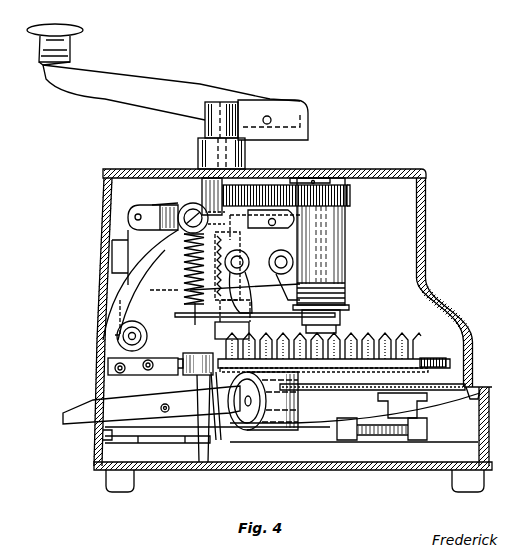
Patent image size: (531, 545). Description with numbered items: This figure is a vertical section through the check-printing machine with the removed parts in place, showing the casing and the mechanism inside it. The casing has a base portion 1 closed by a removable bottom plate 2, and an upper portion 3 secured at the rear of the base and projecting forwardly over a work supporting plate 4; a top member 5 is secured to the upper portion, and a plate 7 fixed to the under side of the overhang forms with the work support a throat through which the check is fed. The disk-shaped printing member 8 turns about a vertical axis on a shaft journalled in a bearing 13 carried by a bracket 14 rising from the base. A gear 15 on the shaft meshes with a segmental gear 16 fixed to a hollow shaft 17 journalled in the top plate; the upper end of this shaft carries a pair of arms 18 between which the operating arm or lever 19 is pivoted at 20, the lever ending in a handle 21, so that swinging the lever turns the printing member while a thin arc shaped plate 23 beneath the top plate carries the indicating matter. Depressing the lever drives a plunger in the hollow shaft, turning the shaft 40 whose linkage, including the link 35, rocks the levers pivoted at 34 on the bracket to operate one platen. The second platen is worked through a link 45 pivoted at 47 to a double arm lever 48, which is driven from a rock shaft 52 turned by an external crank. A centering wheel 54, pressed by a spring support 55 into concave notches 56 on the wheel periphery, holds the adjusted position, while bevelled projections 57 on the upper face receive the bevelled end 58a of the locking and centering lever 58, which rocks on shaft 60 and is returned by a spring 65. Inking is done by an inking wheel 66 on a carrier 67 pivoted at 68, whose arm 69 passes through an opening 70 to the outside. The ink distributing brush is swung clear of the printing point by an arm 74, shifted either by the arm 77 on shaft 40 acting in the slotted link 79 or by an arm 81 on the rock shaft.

The base portion 1 is at (490, 426).
The removable bottom plate 2 is at (416, 470).
The upper portion 3 is at (98, 338).
The work supporting plate 4 is at (484, 392).
The top member 5 is at (343, 167).
The plate 7 is at (450, 384).
The printing member 8 is at (446, 359).
The bearing 13 is at (345, 247).
The bracket 14 is at (138, 287).
The gear 15 is at (350, 198).
The segmental gear 16 is at (273, 185).
The hollow shaft 17 is at (205, 125).
The arms 18 is at (308, 118).
The operating arm or lever 19 is at (168, 82).
The pivot 20 is at (269, 116).
The handle 21 is at (82, 32).
The arc shaped plate 23 is at (314, 180).
The pivot 34 is at (182, 206).
The link 35 is at (298, 216).
The shaft 40 is at (248, 255).
The link 45 is at (128, 242).
The pivot 47 is at (130, 216).
The double arm lever 48 is at (152, 207).
The rock shaft 52 is at (293, 262).
The centering wheel 54 is at (220, 445).
The spring support 55 is at (152, 375).
The concave notches 56 is at (412, 358).
The projections 57 is at (378, 335).
The locking and centering lever 58 is at (180, 315).
The bevelled end 58a is at (238, 333).
The shaft 60 is at (120, 342).
The spring 65 is at (182, 262).
The inking wheel 66 is at (292, 432).
The carrier 67 is at (205, 464).
The pivot 68 is at (165, 412).
The arm 69 is at (98, 402).
The opening 70 is at (103, 432).
The arm 74 is at (333, 320).
The arm 77 is at (303, 281).
The link 79 is at (322, 318).
The arm 81 is at (190, 290).